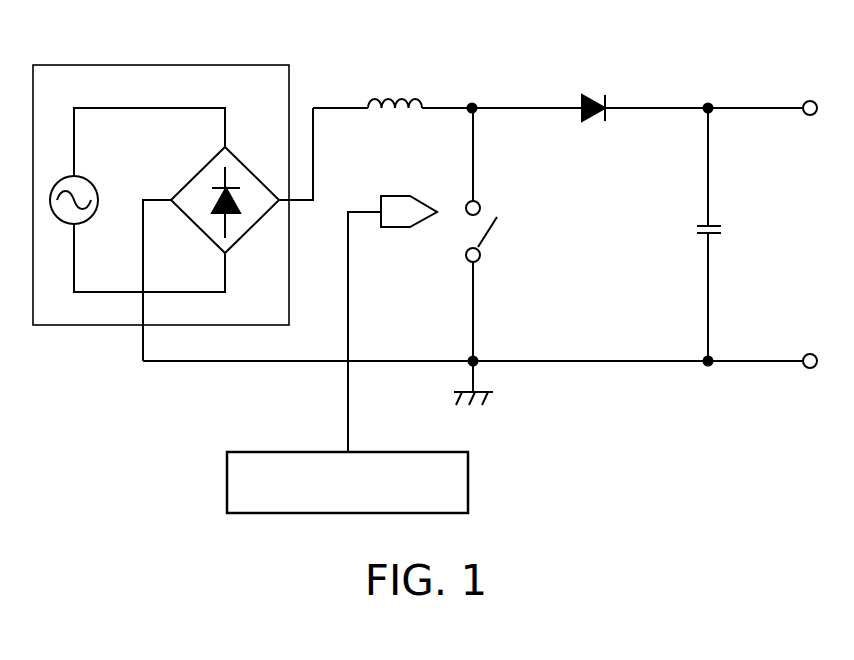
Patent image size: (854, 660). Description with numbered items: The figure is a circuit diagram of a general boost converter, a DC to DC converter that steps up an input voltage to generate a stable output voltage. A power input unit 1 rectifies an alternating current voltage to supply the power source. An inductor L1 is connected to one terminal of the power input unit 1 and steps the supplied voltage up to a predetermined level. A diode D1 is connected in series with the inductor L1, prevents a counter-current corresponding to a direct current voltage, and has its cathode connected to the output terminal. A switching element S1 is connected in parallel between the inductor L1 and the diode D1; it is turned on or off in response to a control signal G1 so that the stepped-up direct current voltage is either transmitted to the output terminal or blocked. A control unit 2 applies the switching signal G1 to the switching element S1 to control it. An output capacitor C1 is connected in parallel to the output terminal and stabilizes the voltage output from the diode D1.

The power input unit 1 is at (198, 65).
The control unit 2 is at (468, 481).
The inductor L1 is at (395, 85).
The diode D1 is at (597, 91).
The output capacitor C1 is at (726, 234).
The switching element S1 is at (491, 234).
The control signal G1 is at (392, 324).